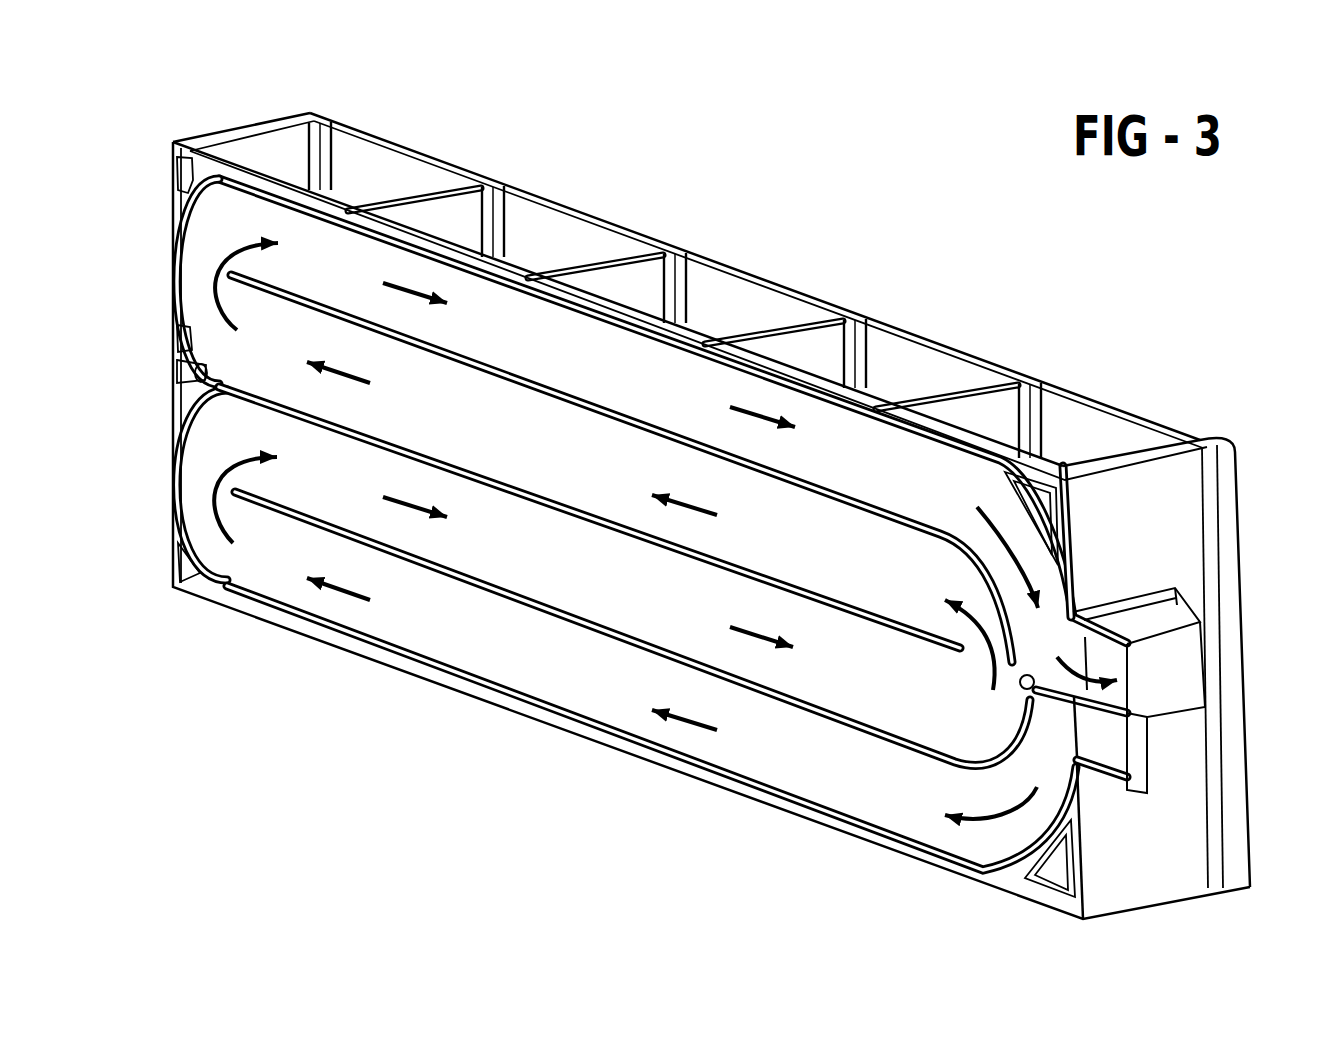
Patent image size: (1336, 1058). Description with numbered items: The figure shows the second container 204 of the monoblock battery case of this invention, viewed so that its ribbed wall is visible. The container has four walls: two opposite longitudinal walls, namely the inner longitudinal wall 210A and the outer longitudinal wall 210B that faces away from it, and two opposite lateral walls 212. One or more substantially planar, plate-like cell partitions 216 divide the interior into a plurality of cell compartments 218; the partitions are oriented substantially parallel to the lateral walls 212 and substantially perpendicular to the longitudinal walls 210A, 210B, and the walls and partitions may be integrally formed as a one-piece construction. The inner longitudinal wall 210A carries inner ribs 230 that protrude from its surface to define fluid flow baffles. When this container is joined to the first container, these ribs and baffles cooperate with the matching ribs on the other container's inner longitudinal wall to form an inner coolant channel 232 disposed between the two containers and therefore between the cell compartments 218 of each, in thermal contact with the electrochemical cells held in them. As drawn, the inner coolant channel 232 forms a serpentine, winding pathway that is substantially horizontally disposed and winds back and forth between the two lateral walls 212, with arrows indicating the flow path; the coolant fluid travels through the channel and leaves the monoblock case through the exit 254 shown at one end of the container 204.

The second container 204 is at (1213, 420).
The inner longitudinal wall 210A is at (170, 236).
The outer longitudinal wall 210B is at (410, 138).
The lateral wall 212 is at (243, 118).
The cell partition 216 is at (628, 250).
The cell compartment 218 is at (563, 237).
The inner rib 230 is at (813, 490).
The inner coolant channel 232 is at (657, 395).
The exit 254 is at (1177, 738).